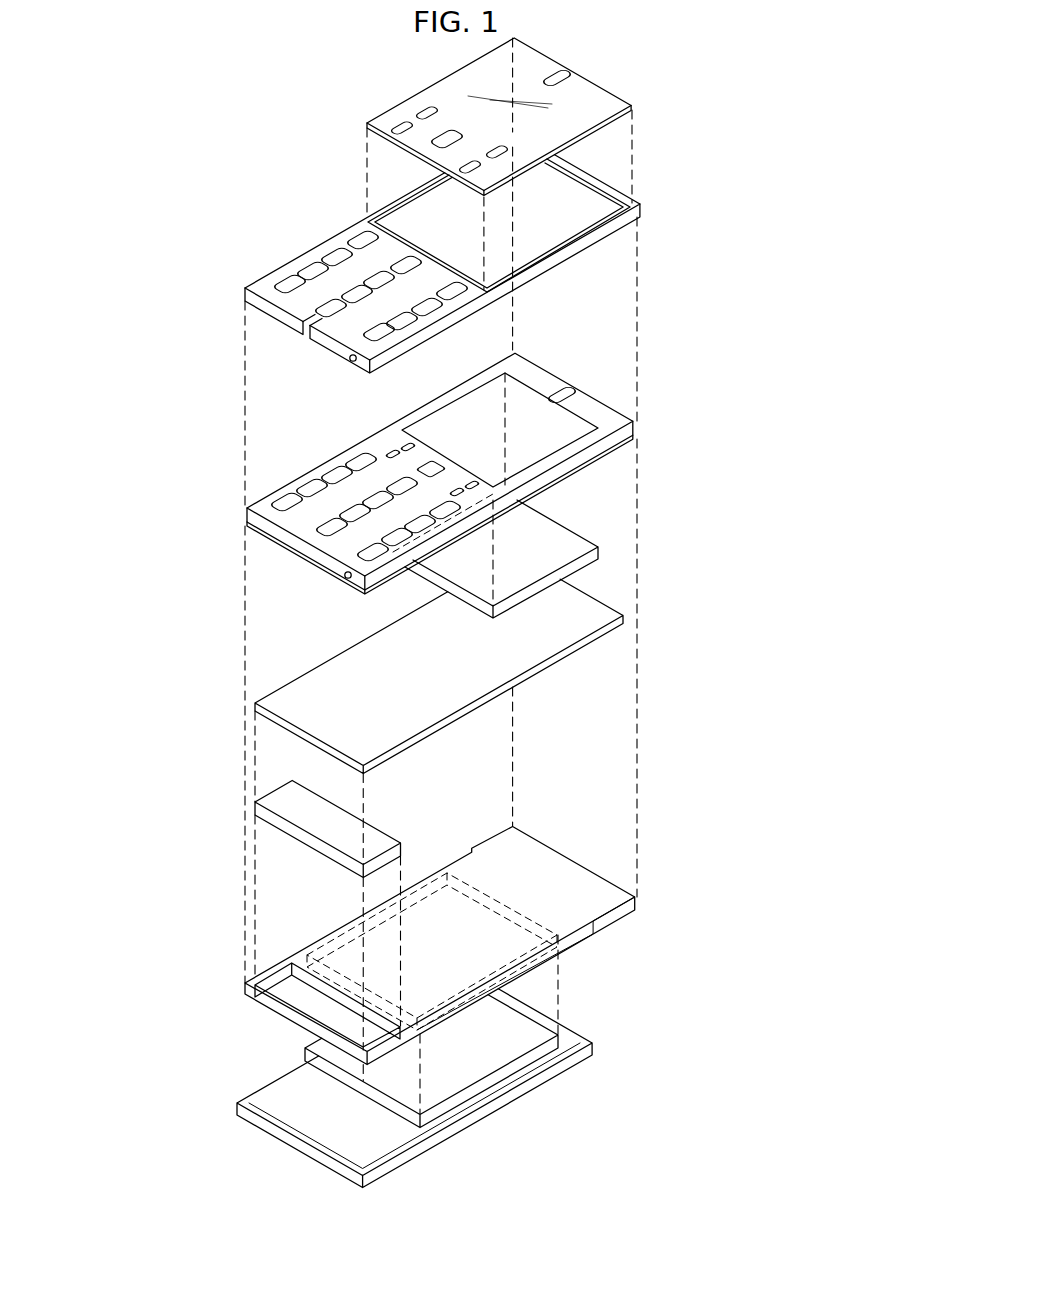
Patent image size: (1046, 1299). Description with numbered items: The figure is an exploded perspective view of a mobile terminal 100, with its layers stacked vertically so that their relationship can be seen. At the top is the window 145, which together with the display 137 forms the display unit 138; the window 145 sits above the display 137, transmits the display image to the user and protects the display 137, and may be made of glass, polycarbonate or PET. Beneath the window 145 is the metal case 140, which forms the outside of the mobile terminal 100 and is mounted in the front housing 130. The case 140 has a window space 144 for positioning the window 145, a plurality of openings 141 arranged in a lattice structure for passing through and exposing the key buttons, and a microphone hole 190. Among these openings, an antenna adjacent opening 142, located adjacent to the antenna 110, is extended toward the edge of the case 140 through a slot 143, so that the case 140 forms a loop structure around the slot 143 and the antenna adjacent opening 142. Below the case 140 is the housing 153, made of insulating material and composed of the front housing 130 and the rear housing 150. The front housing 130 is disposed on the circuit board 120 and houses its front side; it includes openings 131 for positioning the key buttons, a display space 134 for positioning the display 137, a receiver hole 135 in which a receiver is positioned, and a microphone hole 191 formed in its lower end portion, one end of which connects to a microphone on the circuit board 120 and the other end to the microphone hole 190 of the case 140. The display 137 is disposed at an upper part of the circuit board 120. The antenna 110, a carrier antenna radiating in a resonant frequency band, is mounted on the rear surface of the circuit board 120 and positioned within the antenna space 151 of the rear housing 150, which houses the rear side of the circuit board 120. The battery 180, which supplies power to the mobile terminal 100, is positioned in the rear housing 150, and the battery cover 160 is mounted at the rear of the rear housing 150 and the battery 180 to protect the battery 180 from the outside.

The mobile terminal 100 is at (721, 64).
The antenna 110 is at (405, 826).
The circuit board 120 is at (628, 617).
The front housing 130 is at (450, 451).
The openings 131 is at (292, 477).
The display space 134 is at (495, 415).
The receiver hole 135 is at (557, 394).
The display 137 is at (455, 570).
The display unit 138 is at (72, 553).
The case 140 is at (459, 266).
The openings 141 is at (307, 271).
The antenna adjacent opening 142 is at (322, 300).
The slot 143 is at (304, 312).
The window space 144 is at (535, 194).
The window 145 is at (400, 113).
The rear housing 150 is at (468, 749).
The antenna space 151 is at (318, 1004).
The housing 153 is at (768, 393).
The battery cover 160 is at (535, 1089).
The battery 180 is at (522, 1030).
The microphone hole 190 is at (351, 359).
The microphone hole 191 is at (340, 578).